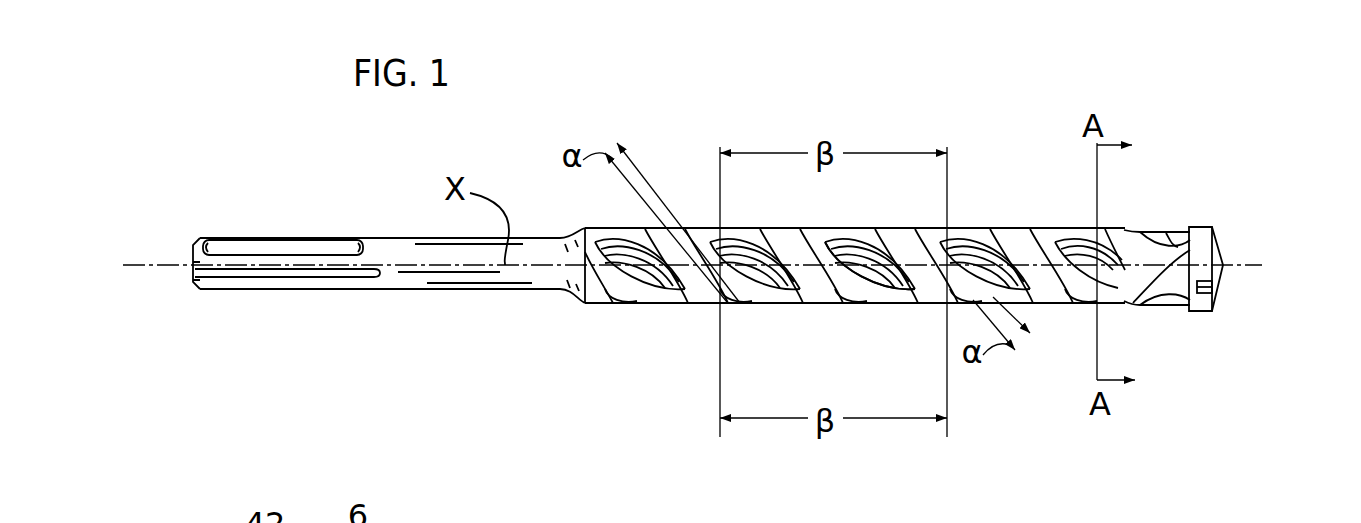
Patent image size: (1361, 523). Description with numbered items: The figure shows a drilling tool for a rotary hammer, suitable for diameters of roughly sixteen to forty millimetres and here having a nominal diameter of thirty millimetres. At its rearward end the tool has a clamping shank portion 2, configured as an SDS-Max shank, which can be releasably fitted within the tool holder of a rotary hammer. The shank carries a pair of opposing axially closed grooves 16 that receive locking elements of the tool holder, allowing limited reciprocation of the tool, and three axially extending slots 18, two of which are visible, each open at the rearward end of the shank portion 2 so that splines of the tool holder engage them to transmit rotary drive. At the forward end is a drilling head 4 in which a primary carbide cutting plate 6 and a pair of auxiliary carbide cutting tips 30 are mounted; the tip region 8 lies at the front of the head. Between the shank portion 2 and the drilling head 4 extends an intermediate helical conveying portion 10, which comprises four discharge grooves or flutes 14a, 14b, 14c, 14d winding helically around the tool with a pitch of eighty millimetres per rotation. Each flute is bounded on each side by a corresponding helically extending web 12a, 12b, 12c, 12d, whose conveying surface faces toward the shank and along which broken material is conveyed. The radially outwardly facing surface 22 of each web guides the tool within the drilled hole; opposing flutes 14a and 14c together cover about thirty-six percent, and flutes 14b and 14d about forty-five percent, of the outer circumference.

The clamping shank portion 2 is at (197, 302).
The drilling head 4 is at (1135, 220).
The primary carbide cutting plate 6 is at (1205, 310).
The tip face 8 is at (1225, 255).
The helical conveying portion 10 is at (1120, 113).
The helical web 12a is at (1142, 298).
The helical web 12b is at (947, 297).
The helical web 12c is at (1043, 303).
The helical web 12d is at (1085, 300).
The helical flute 14a is at (897, 253).
The helical flute 14b is at (957, 253).
The helical flute 14c is at (1010, 247).
The helical flute 14d is at (1047, 232).
The axially closed groove 16 is at (276, 246).
The axially extending slot 18 is at (200, 288).
The radially outwardly facing surface 22 is at (740, 287).
The auxiliary carbide cutting tip 30 is at (1223, 290).